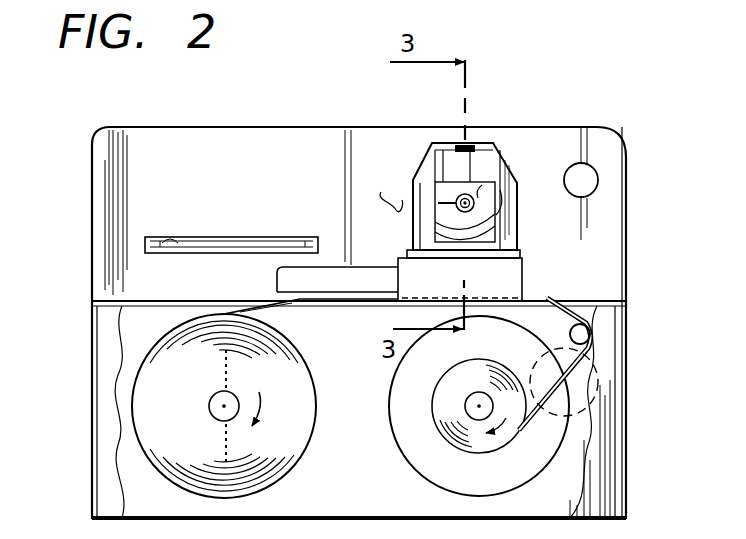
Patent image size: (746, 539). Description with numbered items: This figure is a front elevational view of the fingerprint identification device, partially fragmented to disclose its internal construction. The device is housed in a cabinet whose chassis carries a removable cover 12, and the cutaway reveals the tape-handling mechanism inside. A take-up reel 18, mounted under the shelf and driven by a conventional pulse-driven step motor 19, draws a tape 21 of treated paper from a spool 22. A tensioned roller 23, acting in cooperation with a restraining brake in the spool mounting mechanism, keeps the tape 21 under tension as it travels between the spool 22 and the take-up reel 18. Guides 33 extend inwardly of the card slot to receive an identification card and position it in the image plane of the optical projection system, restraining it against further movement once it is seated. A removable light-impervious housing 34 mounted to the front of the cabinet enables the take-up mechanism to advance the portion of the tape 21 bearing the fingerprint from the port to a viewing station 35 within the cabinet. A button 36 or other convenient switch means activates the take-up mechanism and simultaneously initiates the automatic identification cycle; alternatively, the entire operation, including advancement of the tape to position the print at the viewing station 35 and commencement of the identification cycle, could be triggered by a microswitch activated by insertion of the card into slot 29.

The cover 12 is at (359, 322).
The take-up reel 18 is at (568, 305).
The step motor 19 is at (592, 385).
The tape 21 is at (533, 338).
The spool 22 is at (143, 433).
The tensioned roller 23 is at (588, 332).
The slot 29 is at (177, 243).
The guides 33 is at (150, 238).
The light-impervious housing 34 is at (497, 165).
The viewing station 35 is at (434, 297).
The button 36 is at (590, 177).